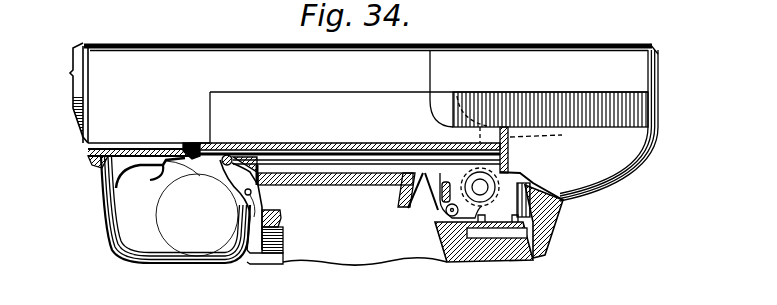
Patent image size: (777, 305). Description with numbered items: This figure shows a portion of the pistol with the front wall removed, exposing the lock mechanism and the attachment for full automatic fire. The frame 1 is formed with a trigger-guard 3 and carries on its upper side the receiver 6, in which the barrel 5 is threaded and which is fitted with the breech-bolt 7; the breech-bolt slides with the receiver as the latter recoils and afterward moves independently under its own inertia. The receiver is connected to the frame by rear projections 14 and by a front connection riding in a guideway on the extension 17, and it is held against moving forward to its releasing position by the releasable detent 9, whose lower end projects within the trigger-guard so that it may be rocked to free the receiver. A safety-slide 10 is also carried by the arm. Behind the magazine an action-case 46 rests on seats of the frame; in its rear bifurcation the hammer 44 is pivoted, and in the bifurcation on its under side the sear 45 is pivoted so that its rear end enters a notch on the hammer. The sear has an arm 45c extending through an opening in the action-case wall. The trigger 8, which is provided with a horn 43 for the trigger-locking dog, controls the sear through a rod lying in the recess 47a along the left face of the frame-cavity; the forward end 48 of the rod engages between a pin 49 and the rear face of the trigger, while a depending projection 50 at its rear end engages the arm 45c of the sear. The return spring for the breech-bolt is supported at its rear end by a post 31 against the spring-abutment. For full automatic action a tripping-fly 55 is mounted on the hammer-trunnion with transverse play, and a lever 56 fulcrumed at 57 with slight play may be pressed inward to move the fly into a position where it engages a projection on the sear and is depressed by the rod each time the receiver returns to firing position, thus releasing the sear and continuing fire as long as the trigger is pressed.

The frame 1 is at (535, 237).
The trigger-guard 3 is at (114, 222).
The barrel 5 is at (71, 74).
The receiver 6 is at (370, 93).
The breech-bolt 7 is at (550, 101).
The trigger 8 is at (245, 194).
The releasable detent 9 is at (138, 182).
The safety-slide 10 is at (510, 233).
The rear projections 14 is at (418, 158).
The extension 17 is at (110, 165).
The post 31 is at (88, 153).
The horn 43 is at (281, 216).
The hammer 44 is at (549, 136).
The sear 45 is at (444, 214).
The arm of the sear 45c is at (443, 160).
The action-case 46 is at (583, 171).
The recess 47a is at (429, 117).
The forward end of the rod 48 is at (227, 165).
The pin 49 is at (253, 177).
The depending projection 50 is at (458, 180).
The tripping-fly 55 is at (503, 175).
The lever 56 is at (567, 207).
The fulcrum 57 is at (555, 219).